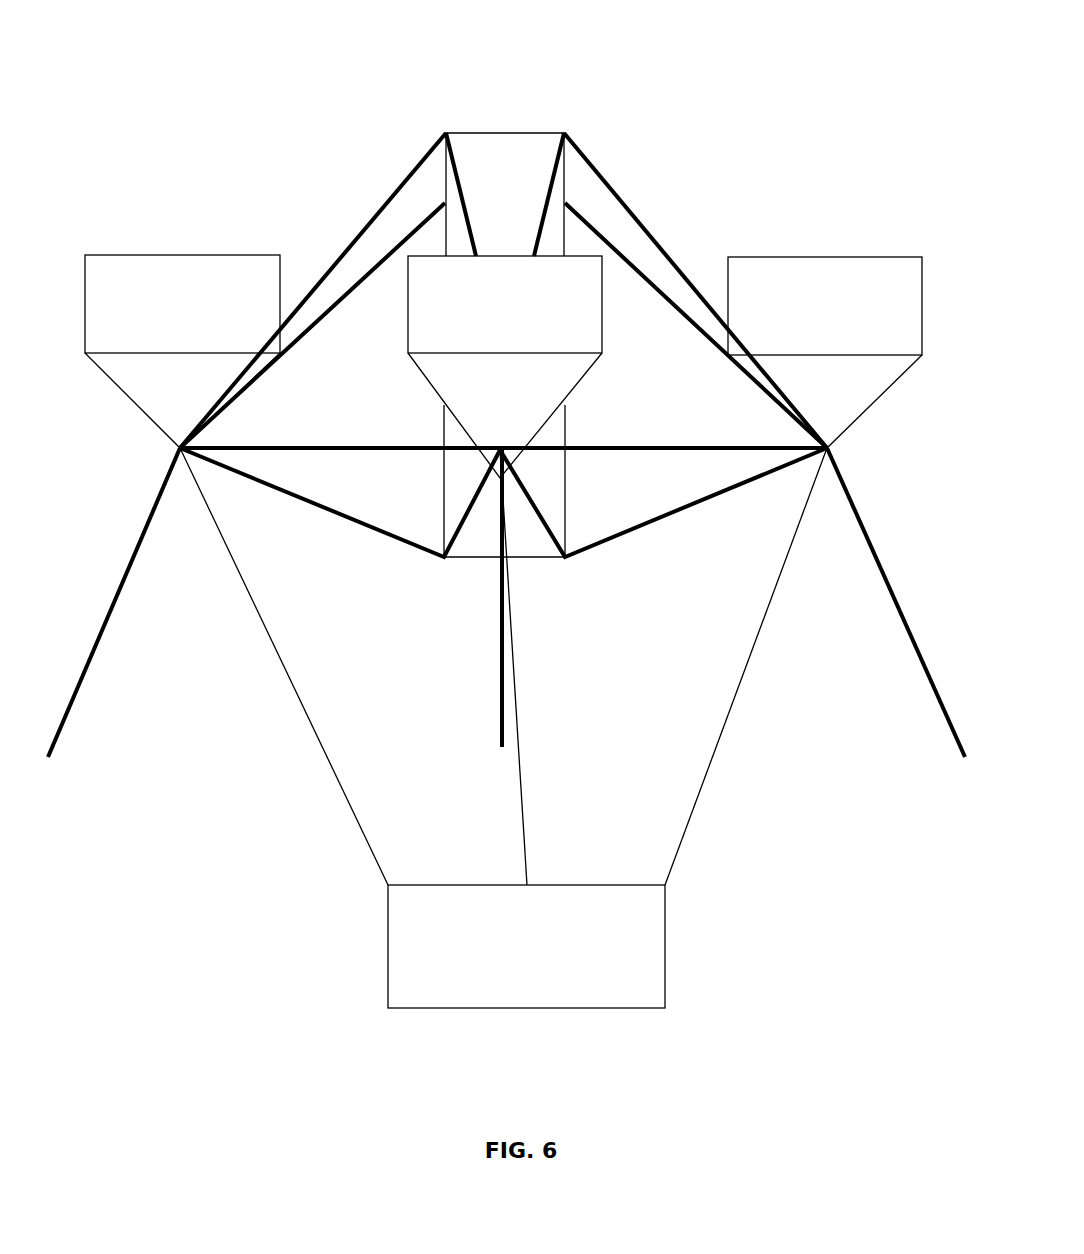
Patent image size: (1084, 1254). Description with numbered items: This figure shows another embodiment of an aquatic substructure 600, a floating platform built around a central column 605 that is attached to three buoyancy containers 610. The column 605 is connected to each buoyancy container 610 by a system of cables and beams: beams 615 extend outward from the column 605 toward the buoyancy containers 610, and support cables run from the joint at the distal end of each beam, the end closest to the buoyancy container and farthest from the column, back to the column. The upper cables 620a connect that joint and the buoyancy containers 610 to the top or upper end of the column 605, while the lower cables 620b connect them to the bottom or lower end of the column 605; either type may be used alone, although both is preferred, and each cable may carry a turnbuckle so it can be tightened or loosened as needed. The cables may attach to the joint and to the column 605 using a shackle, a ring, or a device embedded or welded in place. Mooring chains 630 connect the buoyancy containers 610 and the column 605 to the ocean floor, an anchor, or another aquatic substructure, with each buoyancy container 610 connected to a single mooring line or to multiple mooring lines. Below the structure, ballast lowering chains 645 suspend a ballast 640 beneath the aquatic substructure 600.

The aquatic substructure 600 is at (678, 82).
The column 605 is at (485, 184).
The buoyancy containers 610 is at (168, 306).
The beams 615 is at (350, 432).
The upper cables 620a is at (503, 290).
The lower cables 620b is at (503, 502).
The mooring chains 630 is at (506, 602).
The ballast 640 is at (516, 970).
The ballast lowering chains 645 is at (503, 666).